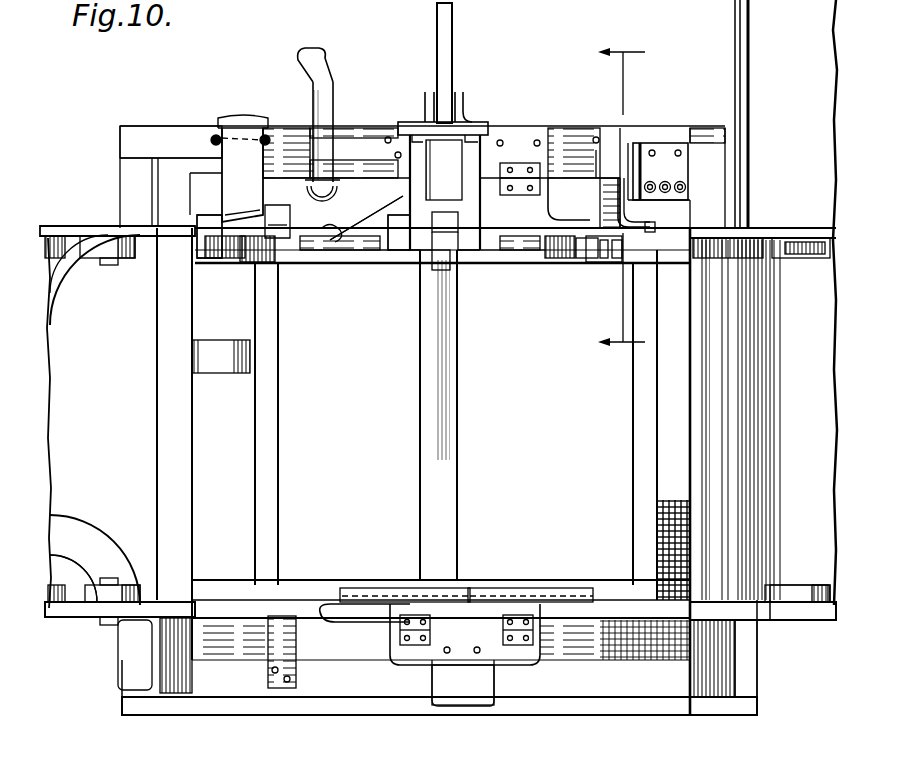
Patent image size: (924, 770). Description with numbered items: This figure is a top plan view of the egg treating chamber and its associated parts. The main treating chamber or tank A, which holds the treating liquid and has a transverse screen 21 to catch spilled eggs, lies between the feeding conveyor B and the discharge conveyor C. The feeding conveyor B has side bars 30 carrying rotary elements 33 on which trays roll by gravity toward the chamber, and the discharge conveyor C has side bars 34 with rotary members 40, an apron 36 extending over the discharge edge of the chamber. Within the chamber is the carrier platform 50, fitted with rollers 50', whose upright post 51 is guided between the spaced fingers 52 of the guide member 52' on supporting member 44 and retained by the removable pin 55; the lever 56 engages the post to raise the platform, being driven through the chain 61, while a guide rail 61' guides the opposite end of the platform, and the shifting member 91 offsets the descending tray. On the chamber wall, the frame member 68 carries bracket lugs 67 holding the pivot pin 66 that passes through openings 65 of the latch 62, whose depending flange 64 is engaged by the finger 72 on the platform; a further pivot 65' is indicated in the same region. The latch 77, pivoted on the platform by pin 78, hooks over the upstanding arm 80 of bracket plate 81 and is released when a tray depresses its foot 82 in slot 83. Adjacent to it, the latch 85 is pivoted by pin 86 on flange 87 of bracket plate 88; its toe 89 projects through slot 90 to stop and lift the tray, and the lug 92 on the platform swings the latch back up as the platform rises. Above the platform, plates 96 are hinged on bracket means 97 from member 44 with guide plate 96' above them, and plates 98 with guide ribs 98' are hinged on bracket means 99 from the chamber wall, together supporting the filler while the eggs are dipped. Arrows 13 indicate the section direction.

The section direction arrows 13 is at (637, 197).
The transverse screen 21 is at (670, 540).
The side bars 30 is at (78, 618).
The rotary elements 33 is at (78, 595).
The side bars 34 is at (792, 620).
The apron 36 is at (700, 410).
The rotary members 40 is at (815, 590).
The supporting member 44 is at (425, 120).
The platform 50 is at (282, 462).
The rollers 50' is at (255, 261).
The upright bar or post 51 is at (445, 218).
The spaced fingers 52 is at (438, 214).
The guide member 52' is at (444, 170).
The removable pin 55 is at (392, 240).
The lever or operating bar 56 is at (437, 66).
The chain 61 is at (135, 655).
The guide bar or rail 61' is at (355, 628).
The limiting and lifting member or latch 62 is at (242, 175).
The depending flange 64 is at (268, 190).
The openings 65 is at (230, 106).
The pivot 65' is at (242, 152).
The pivot pin 66 is at (212, 141).
The bracket lugs 67 is at (248, 118).
The supporting member or frame member 68 is at (156, 134).
The finger or lug 72 is at (278, 205).
The latch 77 is at (600, 213).
The pin or pivot element 78 is at (596, 146).
The upstanding arm 80 is at (590, 182).
The bracket plate 81 is at (590, 140).
The foot 82 is at (606, 262).
The slot 83 is at (585, 262).
The stopping and lifting member or latch 85 is at (630, 212).
The pin 86 is at (645, 187).
The upstanding flange 87 is at (640, 142).
The bracket plate 88 is at (668, 145).
The stopping and lifting toe 89 is at (623, 248).
The slot 90 is at (618, 265).
The shifting member 91 is at (230, 365).
The lug 92 is at (656, 226).
The supporting members or plates 96 is at (422, 276).
The guide plate 96' is at (362, 219).
The bracket means 97 is at (505, 138).
The supporting members or plates 98 is at (466, 575).
The guide ribs 98' is at (466, 635).
The bracket means 99 is at (435, 655).
The main treating chamber or tank A is at (232, 682).
The feeding conveyor B is at (55, 625).
The discharge conveyor C is at (826, 628).